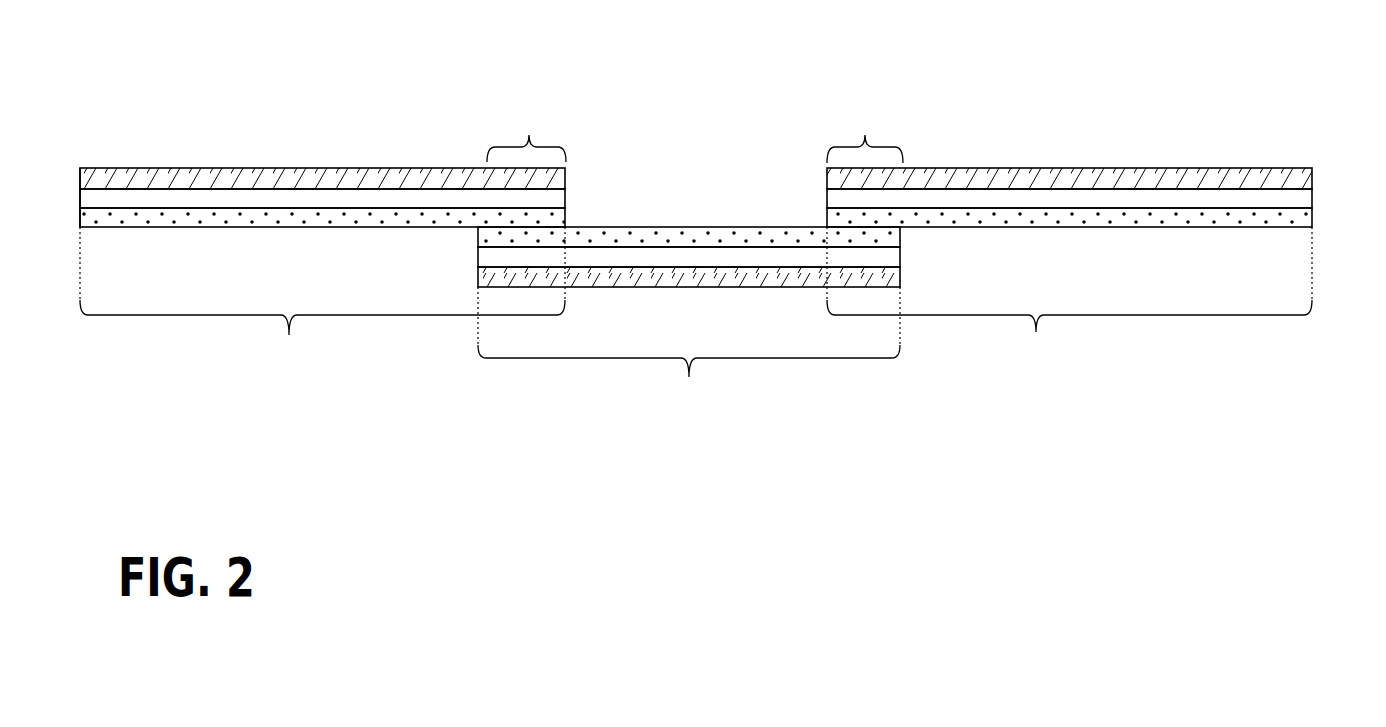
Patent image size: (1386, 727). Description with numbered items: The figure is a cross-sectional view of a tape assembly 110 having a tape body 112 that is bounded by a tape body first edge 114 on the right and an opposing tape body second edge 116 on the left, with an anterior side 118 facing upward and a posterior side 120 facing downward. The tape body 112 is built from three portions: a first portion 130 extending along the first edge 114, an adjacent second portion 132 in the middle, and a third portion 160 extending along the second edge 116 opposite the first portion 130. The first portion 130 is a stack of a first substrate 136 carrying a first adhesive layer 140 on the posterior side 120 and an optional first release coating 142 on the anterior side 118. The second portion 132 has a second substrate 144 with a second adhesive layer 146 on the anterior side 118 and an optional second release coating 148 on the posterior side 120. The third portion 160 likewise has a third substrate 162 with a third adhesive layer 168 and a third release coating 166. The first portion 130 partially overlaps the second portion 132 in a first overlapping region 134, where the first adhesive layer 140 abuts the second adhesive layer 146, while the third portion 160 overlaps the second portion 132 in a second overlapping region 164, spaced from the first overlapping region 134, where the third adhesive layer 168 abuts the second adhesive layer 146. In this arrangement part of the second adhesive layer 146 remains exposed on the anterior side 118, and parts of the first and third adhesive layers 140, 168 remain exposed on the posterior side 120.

The tape assembly 110 is at (700, 125).
The tape body 112 is at (268, 148).
The tape body first edge 114 is at (1314, 178).
The tape body second edge 116 is at (78, 186).
The anterior side 118 is at (617, 195).
The posterior side 120 is at (728, 300).
The first portion 130 is at (1069, 295).
The second portion 132 is at (689, 347).
The first overlapping region 134 is at (865, 136).
The first substrate 136 is at (1018, 198).
The first adhesive layer 140 is at (1120, 228).
The first release coating 142 is at (1115, 170).
The second substrate 144 is at (665, 260).
The second adhesive layer 146 is at (712, 228).
The second release coating 148 is at (658, 288).
The third portion 160 is at (322, 297).
The third substrate 162 is at (172, 200).
The second overlapping region 164 is at (526, 132).
The third release coating 166 is at (353, 175).
The third adhesive layer 168 is at (253, 228).